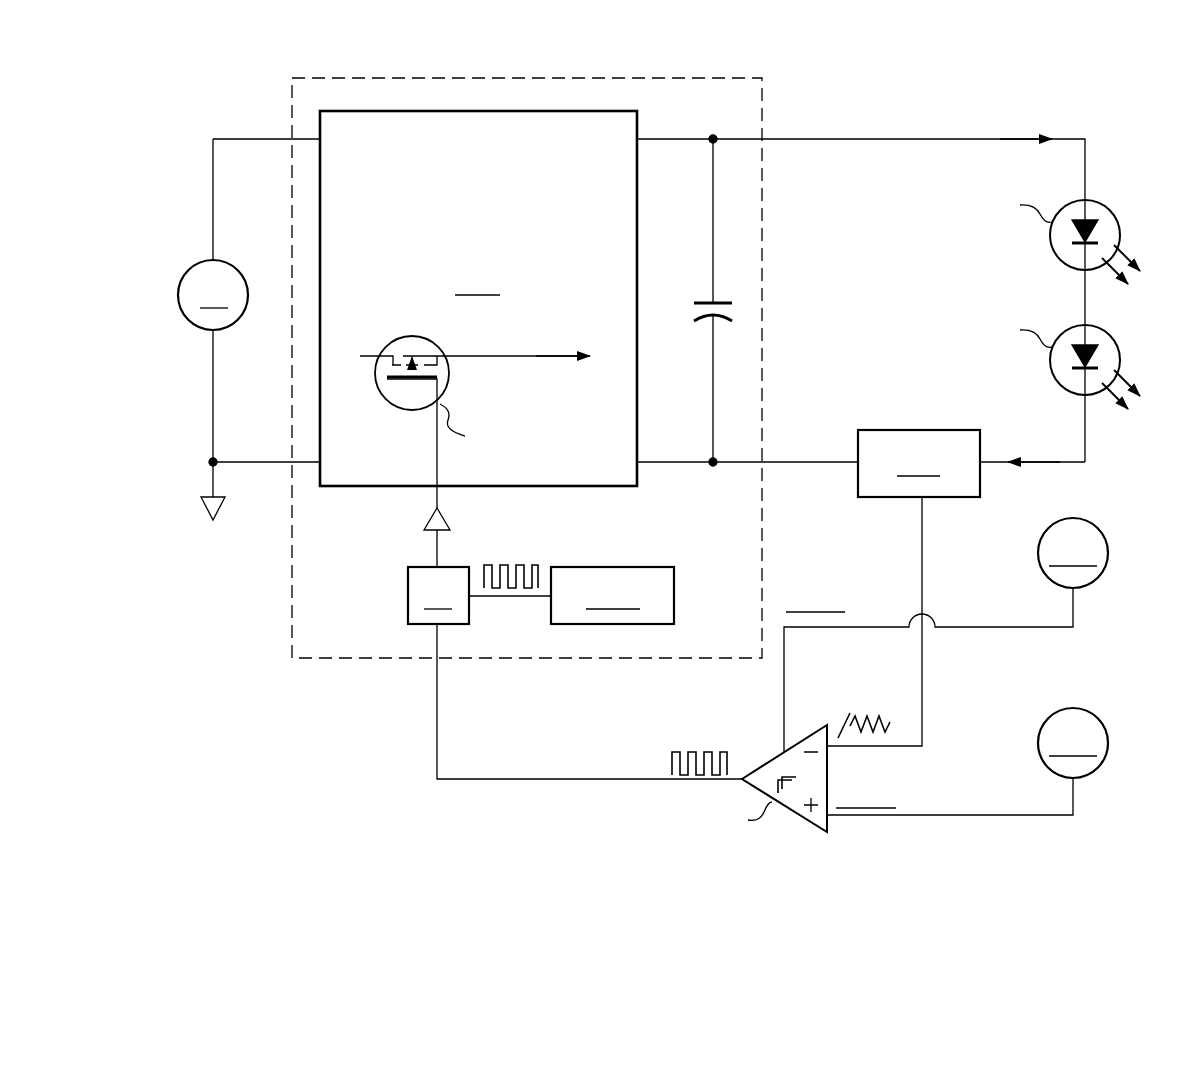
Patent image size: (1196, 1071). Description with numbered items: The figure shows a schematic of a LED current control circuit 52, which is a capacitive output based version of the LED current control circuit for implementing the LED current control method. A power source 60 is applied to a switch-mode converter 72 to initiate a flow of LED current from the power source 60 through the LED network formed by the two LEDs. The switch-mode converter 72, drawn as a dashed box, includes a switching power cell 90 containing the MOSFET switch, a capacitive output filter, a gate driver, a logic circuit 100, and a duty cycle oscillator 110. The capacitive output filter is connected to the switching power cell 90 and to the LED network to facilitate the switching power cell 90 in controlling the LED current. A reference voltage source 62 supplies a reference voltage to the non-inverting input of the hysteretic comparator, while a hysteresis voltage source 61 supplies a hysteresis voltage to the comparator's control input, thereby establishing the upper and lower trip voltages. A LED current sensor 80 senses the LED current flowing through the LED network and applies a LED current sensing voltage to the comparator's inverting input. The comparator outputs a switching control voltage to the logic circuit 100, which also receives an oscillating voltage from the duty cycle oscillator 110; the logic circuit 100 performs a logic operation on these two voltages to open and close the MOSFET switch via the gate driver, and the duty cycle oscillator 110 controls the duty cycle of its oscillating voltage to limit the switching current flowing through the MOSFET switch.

The LED current control circuit 52 is at (288, 696).
The power source 60 is at (192, 268).
The hysteresis voltage source 61 is at (1107, 560).
The reference voltage source 62 is at (1107, 746).
The switch-mode converter 72 is at (764, 243).
The LED current sensor 80 is at (883, 430).
The switching power cell 90 is at (640, 268).
The logic circuit 100 is at (408, 597).
The duty cycle oscillator 110 is at (676, 580).